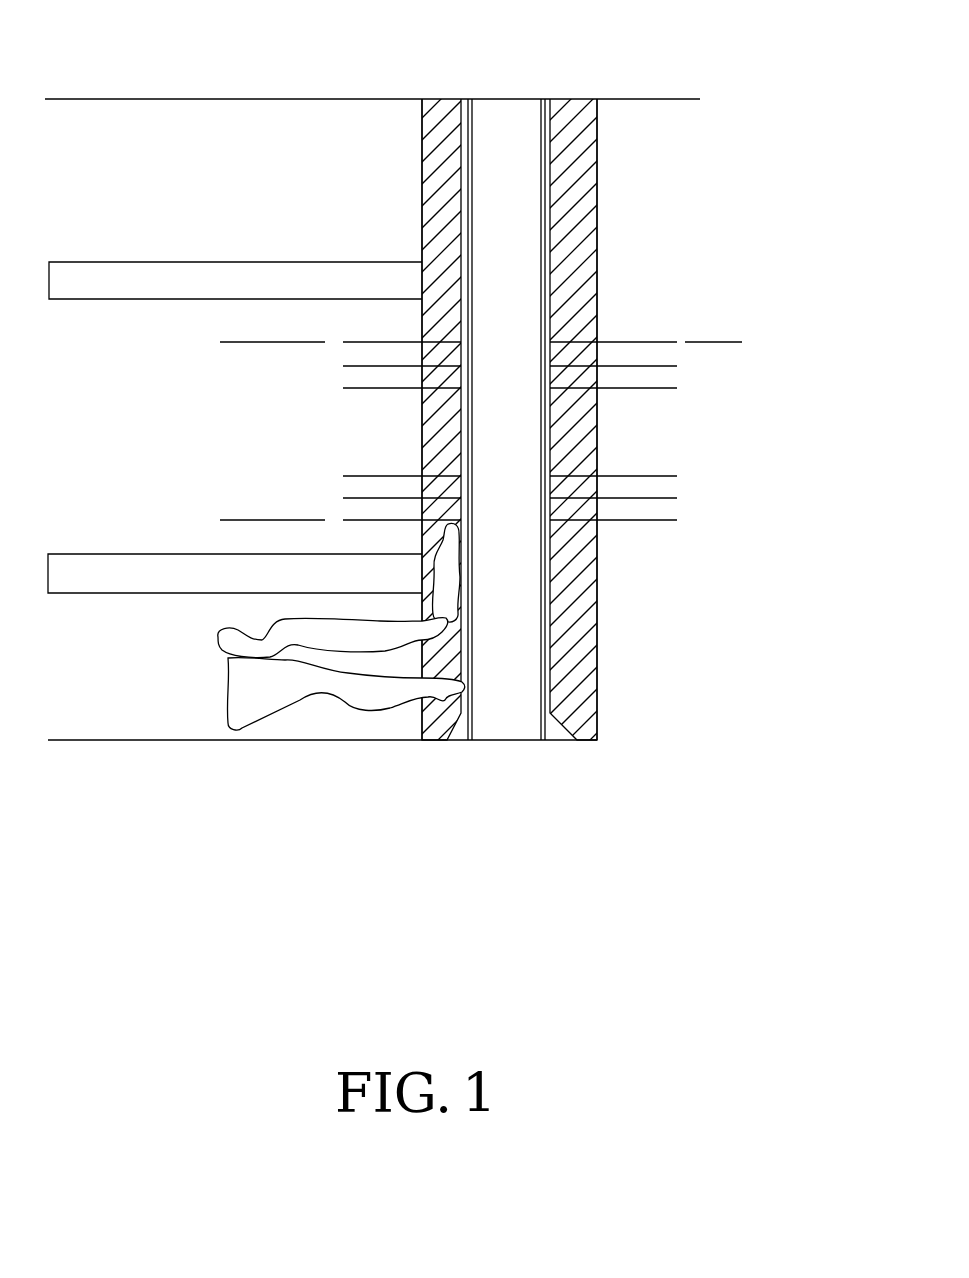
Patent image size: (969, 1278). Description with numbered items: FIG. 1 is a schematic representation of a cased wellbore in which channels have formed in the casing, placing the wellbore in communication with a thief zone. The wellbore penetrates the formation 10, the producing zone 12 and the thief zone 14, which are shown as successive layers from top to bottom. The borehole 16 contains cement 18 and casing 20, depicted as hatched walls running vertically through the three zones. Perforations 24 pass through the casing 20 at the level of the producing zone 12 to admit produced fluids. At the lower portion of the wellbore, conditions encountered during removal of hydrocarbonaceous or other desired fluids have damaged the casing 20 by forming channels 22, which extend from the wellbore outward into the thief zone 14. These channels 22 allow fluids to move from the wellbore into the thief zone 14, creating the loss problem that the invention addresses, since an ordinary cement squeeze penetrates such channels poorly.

The formation 10 is at (164, 191).
The producing zone 12 is at (164, 430).
The thief zone 14 is at (164, 675).
The borehole 16 is at (597, 197).
The cement 18 is at (435, 120).
The casing 20 is at (553, 670).
The channels 22 is at (457, 527).
The perforations 24 is at (222, 343).